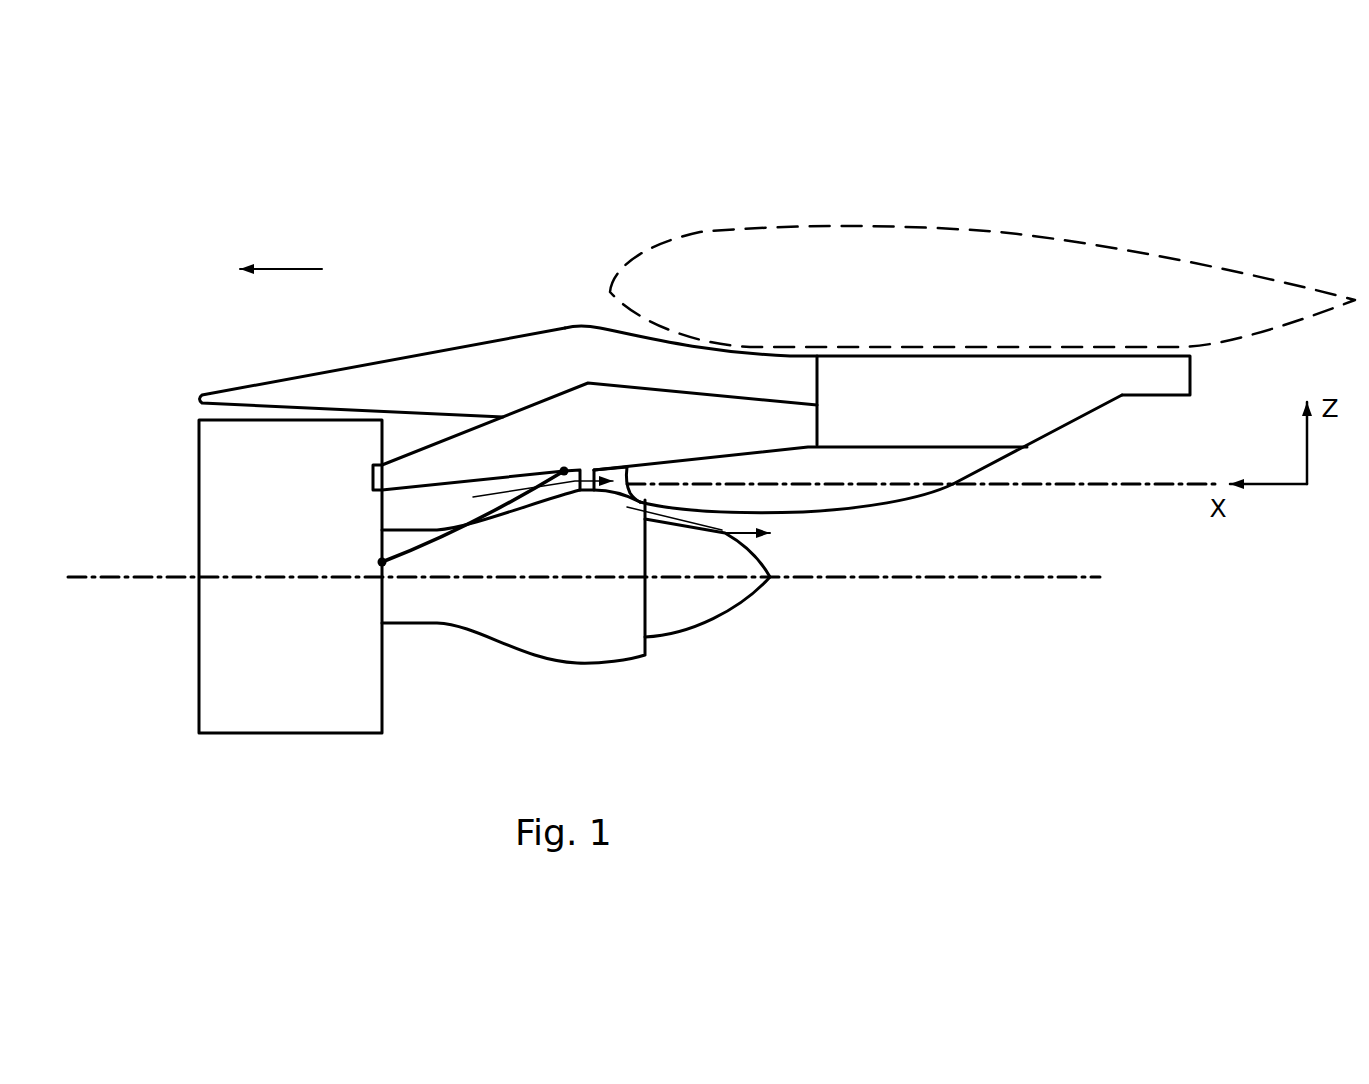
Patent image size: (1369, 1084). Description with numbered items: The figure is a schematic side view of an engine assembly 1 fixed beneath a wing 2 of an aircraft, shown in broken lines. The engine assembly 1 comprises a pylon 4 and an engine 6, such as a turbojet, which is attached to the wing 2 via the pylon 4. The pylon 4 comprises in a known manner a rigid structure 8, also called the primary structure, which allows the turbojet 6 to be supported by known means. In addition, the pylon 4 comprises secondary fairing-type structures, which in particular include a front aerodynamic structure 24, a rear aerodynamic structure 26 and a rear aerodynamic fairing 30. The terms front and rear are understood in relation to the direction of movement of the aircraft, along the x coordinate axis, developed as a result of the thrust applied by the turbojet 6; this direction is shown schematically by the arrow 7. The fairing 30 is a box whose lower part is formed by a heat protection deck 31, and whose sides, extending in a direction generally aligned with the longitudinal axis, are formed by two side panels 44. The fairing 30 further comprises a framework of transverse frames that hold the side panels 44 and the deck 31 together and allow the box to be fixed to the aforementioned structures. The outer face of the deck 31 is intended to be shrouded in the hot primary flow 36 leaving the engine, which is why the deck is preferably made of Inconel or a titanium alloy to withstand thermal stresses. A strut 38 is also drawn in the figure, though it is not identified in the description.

The engine assembly 1 is at (160, 372).
The wing 2 is at (1112, 282).
The pylon 4 is at (562, 322).
The engine 6 is at (278, 745).
The arrow 7 is at (280, 268).
The rigid structure 8 is at (728, 410).
The front aerodynamic structure 24 is at (418, 365).
The rear aerodynamic structure 26 is at (900, 375).
The rear aerodynamic fairing 30 is at (848, 468).
The heat protection deck 31 is at (805, 512).
The primary flow 36 is at (727, 533).
The strut 38 is at (513, 487).
The side panels 44 is at (938, 455).